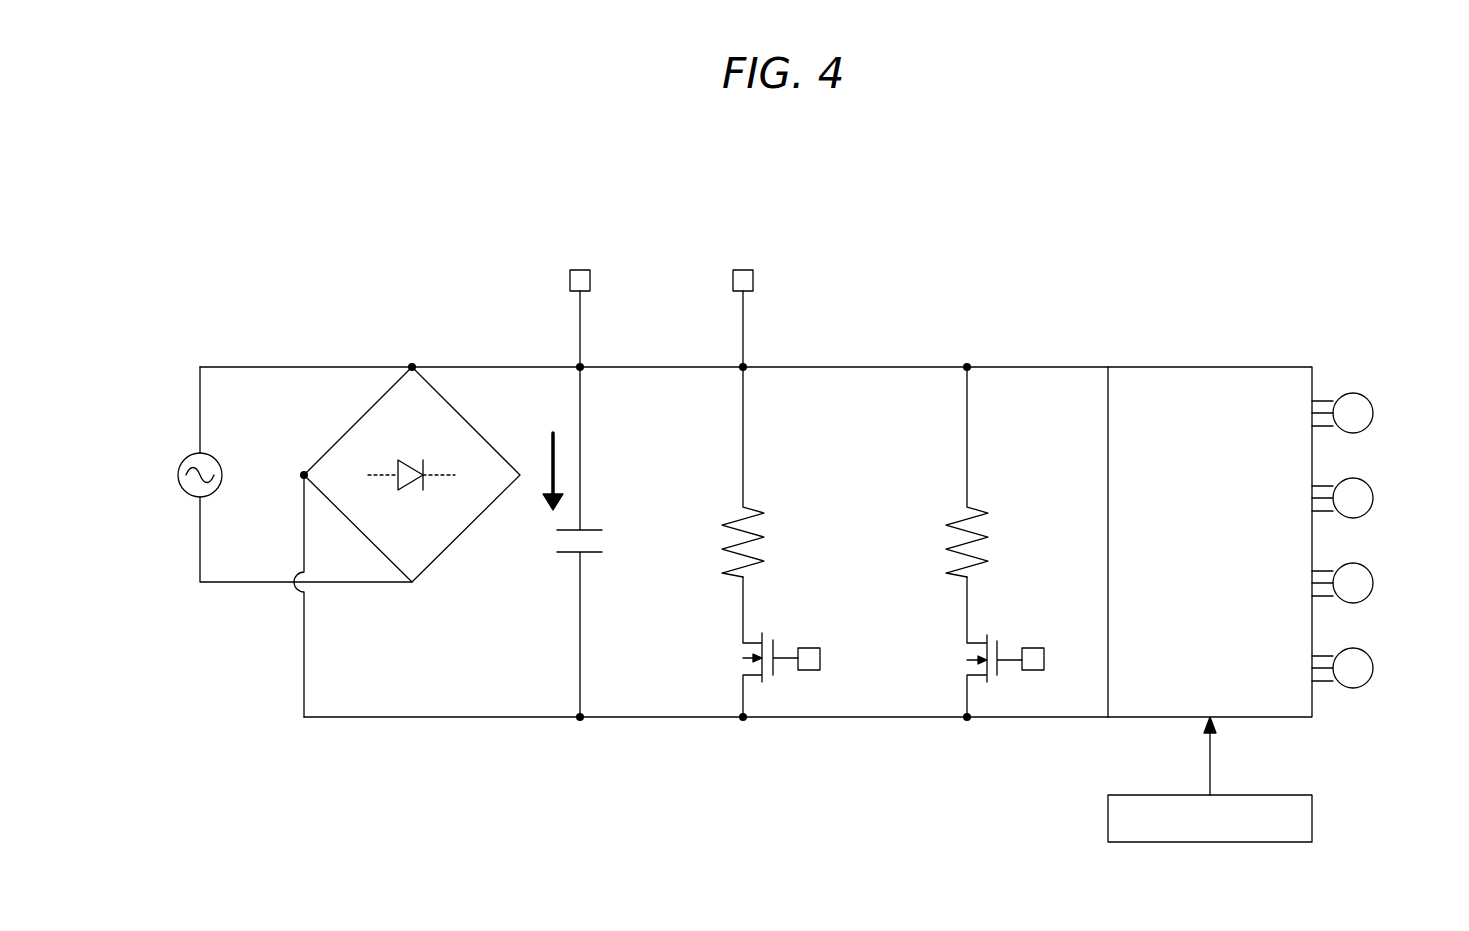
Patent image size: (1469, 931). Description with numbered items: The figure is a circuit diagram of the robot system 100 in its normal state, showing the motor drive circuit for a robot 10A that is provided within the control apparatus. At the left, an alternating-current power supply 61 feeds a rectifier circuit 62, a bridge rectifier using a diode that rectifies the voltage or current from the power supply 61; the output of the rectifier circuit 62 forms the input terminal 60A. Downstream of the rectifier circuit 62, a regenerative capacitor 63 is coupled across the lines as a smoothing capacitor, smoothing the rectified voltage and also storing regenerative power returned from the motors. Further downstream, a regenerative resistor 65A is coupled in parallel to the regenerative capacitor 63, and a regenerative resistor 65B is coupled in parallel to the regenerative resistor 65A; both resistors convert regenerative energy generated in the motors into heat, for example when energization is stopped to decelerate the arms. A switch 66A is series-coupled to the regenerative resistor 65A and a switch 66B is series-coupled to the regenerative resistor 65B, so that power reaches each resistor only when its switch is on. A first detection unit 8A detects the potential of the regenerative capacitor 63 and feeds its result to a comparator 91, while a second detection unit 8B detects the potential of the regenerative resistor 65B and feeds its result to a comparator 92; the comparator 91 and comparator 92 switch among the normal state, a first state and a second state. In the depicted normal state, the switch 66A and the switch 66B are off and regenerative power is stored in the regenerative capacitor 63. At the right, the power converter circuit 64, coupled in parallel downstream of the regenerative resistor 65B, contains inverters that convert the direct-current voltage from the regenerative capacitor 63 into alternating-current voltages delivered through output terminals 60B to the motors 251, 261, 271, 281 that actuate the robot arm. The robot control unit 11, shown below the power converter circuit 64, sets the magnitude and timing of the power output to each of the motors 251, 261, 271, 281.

The robot system 100 is at (963, 190).
The motor drive circuit for a robot 10A is at (888, 323).
The power supply 61 is at (178, 475).
The rectifier circuit 62 is at (383, 396).
The input terminal 60A is at (412, 367).
The output terminals 60B is at (1315, 400).
The first detection unit 8A is at (580, 270).
The second detection unit 8B is at (743, 270).
The regenerative capacitor 63 is at (595, 558).
The regenerative resistor 65A is at (766, 527).
The regenerative resistor 65B is at (990, 527).
The switch 66A is at (755, 660).
The switch 66B is at (980, 661).
The comparator 91 is at (806, 670).
The comparator 92 is at (1037, 670).
The power converter circuit 64 is at (1210, 367).
The motor 251 is at (1373, 413).
The motor 261 is at (1373, 498).
The motor 271 is at (1373, 583).
The motor 281 is at (1373, 668).
The robot control unit 11 is at (1312, 822).